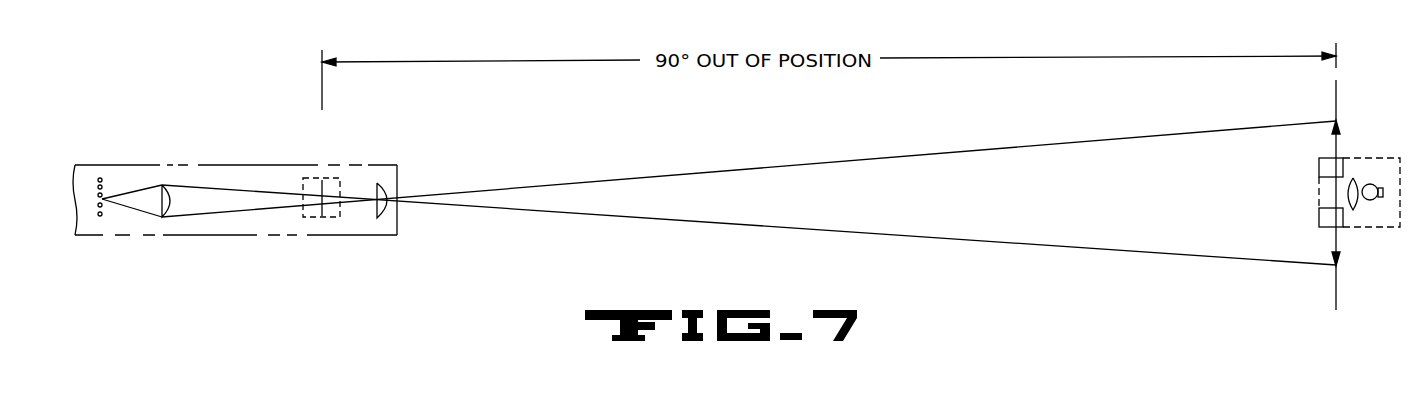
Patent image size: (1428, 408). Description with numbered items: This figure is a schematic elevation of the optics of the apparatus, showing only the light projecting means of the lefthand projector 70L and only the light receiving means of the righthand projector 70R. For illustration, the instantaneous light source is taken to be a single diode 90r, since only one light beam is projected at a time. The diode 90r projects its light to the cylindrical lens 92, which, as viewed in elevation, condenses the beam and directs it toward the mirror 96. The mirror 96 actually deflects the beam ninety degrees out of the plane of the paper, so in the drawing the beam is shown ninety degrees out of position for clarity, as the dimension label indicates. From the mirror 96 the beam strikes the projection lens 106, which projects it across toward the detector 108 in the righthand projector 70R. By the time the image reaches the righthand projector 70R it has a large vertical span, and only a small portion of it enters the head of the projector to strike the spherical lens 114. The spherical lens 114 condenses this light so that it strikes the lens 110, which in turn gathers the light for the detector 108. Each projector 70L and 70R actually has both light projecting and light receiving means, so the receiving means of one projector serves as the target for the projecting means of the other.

The projector 70L is at (235, 157).
The diode 90r is at (103, 198).
The cylindrical lens 92 is at (165, 210).
The mirror 96 is at (321, 213).
The projection lens 106 is at (381, 186).
The projector 70R is at (1306, 221).
The detector 108 is at (1386, 197).
The lens 110 is at (1377, 184).
The spherical lens 114 is at (1354, 179).